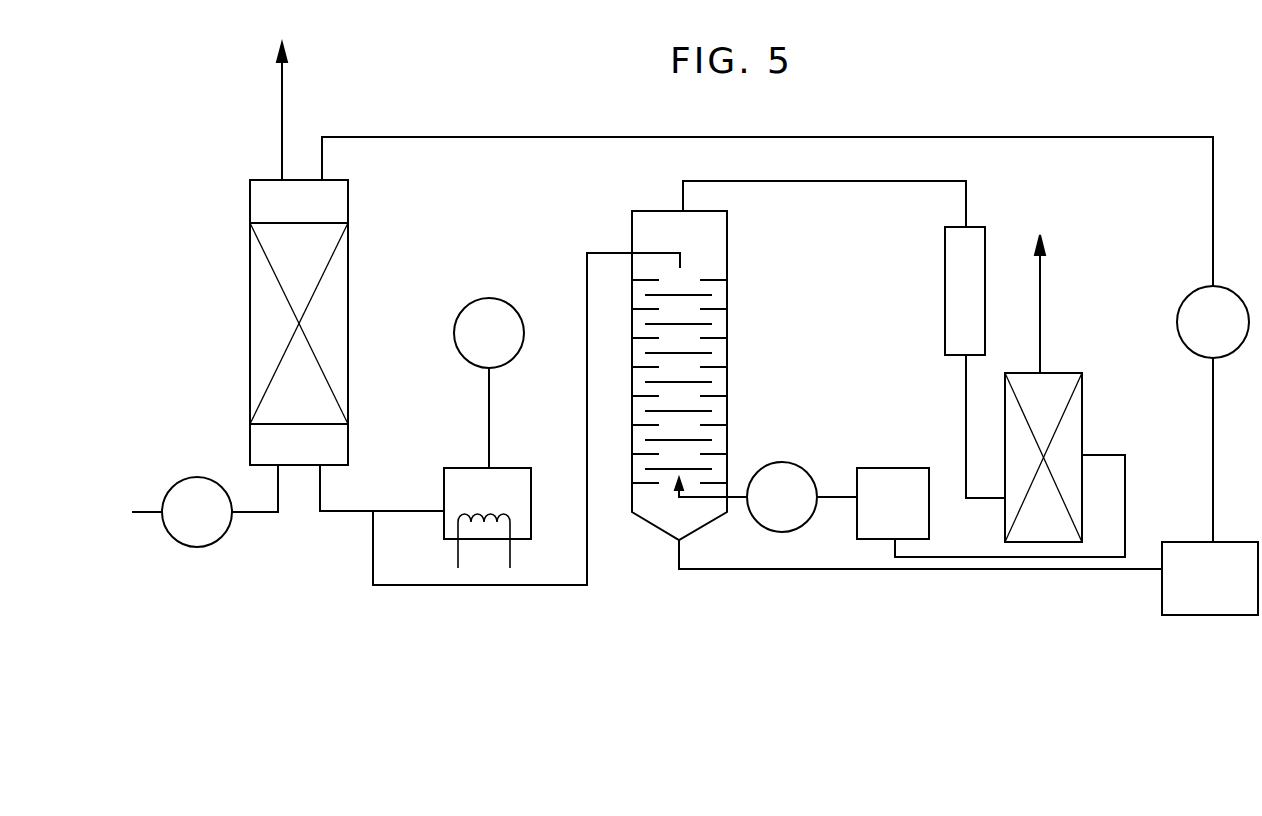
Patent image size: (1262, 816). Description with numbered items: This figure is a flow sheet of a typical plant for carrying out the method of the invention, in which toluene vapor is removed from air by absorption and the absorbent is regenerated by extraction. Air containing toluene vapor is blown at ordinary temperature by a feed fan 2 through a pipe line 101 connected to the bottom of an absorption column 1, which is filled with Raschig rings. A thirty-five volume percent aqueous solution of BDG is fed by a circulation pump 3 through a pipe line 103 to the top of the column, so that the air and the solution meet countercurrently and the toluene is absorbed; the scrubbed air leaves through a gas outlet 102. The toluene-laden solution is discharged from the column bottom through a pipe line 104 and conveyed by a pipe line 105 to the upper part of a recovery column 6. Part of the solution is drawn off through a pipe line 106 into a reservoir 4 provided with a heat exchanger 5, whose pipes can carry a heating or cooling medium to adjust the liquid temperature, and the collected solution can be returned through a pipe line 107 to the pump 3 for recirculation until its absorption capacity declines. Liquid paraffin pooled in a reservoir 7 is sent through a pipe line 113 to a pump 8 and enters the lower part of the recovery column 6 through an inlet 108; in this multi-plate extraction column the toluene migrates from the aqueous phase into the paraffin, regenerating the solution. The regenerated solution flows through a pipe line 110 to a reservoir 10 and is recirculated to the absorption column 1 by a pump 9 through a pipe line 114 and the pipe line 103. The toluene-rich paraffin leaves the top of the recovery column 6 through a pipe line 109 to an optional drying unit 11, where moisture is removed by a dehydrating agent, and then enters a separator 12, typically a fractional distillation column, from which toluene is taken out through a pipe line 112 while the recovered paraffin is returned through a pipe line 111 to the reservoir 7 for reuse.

The absorption column 1 is at (345, 296).
The feed fan 2 is at (190, 480).
The circulation pump 3 is at (497, 302).
The reservoir 4 is at (498, 478).
The heat exchanger 5 is at (458, 564).
The recovery column 6 is at (722, 386).
The reservoir 7 is at (922, 492).
The pump 8 is at (783, 462).
The pump 9 is at (1192, 300).
The reservoir 10 is at (1249, 537).
The drying unit 11 is at (948, 291).
The separator 12 is at (1083, 420).
The pipe line 101 is at (256, 505).
The gas outlet 102 is at (304, 111).
The pipe line 103 is at (767, 199).
The pipe line 104 is at (347, 488).
The pipe line 105 is at (526, 433).
The pipe line 106 is at (408, 496).
The pipe line 107 is at (514, 418).
The inlet 108 is at (717, 514).
The pipe line 109 is at (824, 191).
The pipe line 110 is at (920, 569).
The pipe line 111 is at (1034, 506).
The pipe line 112 is at (1063, 304).
The pipe line 113 is at (840, 483).
The pipe line 114 is at (1237, 450).